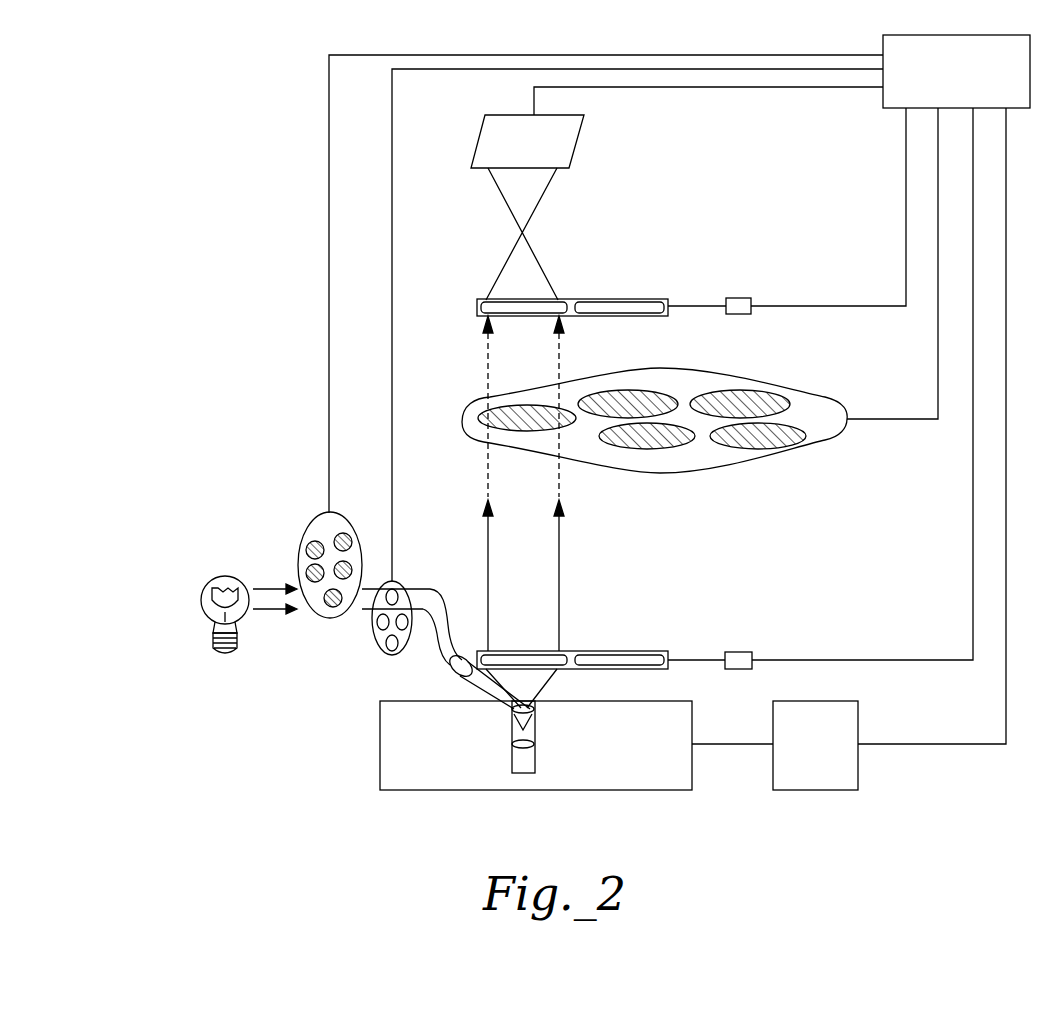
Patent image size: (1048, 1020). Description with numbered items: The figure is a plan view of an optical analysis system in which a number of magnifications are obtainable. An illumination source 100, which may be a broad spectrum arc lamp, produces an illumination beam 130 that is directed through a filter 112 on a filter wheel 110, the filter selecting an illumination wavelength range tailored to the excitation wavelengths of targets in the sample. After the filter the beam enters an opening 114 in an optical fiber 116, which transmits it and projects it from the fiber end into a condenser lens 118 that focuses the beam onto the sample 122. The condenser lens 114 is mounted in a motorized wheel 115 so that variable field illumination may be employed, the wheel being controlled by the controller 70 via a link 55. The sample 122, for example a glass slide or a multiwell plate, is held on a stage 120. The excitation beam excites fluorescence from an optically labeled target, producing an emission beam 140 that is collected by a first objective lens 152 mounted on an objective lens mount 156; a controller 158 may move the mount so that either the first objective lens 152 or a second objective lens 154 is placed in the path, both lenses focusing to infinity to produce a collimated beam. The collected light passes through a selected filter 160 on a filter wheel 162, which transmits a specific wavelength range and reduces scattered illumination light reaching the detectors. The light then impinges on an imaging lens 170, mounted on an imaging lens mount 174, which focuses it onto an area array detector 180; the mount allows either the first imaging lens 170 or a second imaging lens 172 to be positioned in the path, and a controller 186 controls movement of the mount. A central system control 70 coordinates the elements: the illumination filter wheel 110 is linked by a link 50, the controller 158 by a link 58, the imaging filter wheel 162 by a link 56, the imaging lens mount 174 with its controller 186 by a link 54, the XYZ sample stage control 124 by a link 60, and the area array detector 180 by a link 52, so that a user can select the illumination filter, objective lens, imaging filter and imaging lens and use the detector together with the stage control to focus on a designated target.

The link 50 is at (724, 52).
The link 52 is at (730, 88).
The link 54 is at (906, 194).
The link 55 is at (392, 264).
The link 56 is at (938, 361).
The link 58 is at (973, 539).
The link 60 is at (1006, 718).
The central system control 70 is at (970, 84).
The illumination source 100 is at (203, 606).
The filter wheel 110 is at (350, 525).
The filter 112 is at (335, 608).
The condenser lens 114 is at (392, 588).
The motorized wheel 115 is at (380, 655).
The optical fiber 116 is at (438, 598).
The condenser lens 118 is at (458, 657).
The stage 120 is at (412, 790).
The sample 122 is at (525, 773).
The XYZ sample stage control 124 is at (815, 790).
The illumination beam 130 is at (275, 580).
The emission beam 140 is at (505, 266).
The first objective lens 152 is at (562, 652).
The second objective lens 154 is at (648, 652).
The objective lens mount 156 is at (610, 651).
The controller 158 is at (738, 652).
The filter 160 is at (472, 418).
The filter wheel 162 is at (778, 386).
The first imaging lens 170 is at (562, 299).
The second imaging lens 172 is at (652, 299).
The imaging lens mount 174 is at (608, 299).
The area array detector 180 is at (478, 148).
The controller 186 is at (738, 298).